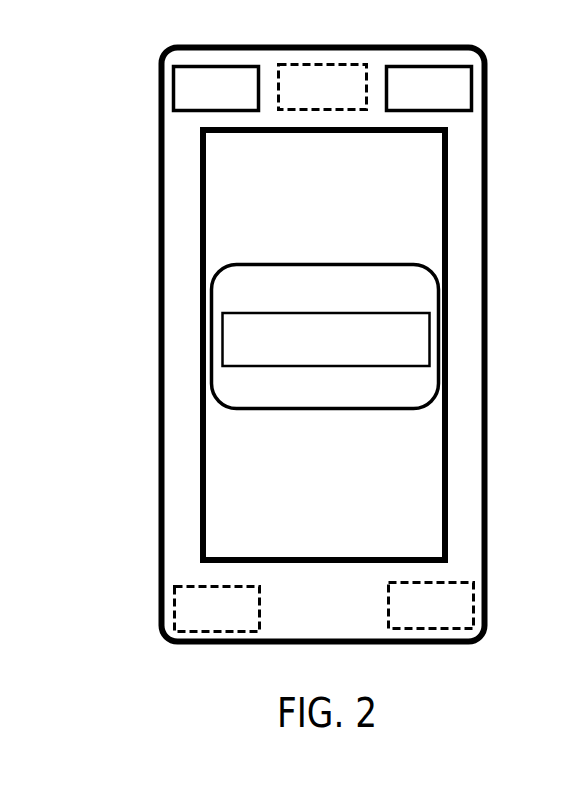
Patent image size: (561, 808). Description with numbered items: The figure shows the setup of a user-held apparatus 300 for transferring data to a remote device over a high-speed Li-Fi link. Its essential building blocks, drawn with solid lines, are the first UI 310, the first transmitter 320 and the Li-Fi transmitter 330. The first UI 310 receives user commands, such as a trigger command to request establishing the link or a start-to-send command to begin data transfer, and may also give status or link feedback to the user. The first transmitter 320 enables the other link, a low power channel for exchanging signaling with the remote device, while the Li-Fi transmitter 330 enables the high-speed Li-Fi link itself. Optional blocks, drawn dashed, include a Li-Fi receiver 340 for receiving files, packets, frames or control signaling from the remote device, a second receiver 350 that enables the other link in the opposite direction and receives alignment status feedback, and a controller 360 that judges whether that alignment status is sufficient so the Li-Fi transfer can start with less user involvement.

The user-held apparatus 300 is at (51, 42).
The first UI 310 is at (218, 299).
The first transmitter 320 is at (216, 90).
The Li-Fi transmitter 330 is at (429, 90).
The Li-Fi receiver 340 is at (323, 88).
The second receiver 350 is at (217, 609).
The controller 360 is at (431, 606).